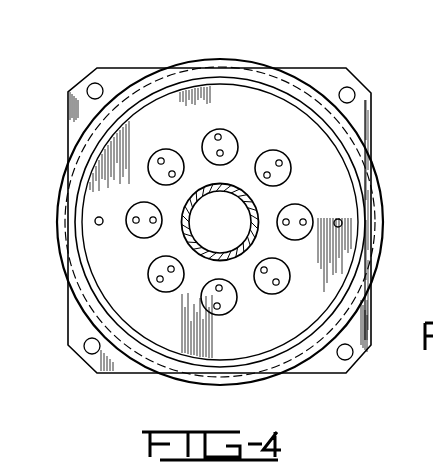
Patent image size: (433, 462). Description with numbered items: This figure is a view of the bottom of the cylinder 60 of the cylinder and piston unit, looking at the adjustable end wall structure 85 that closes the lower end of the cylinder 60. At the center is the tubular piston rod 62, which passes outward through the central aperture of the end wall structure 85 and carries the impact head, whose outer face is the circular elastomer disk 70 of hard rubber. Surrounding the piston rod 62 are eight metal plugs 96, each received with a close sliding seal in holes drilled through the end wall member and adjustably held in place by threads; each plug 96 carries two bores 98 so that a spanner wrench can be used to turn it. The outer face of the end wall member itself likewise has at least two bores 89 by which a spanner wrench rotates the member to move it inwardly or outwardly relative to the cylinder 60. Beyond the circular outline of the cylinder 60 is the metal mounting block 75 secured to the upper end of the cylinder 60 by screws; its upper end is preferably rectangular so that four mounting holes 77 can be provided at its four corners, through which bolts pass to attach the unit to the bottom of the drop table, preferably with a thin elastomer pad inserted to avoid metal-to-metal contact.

The cylinder 60 is at (310, 88).
The piston rod 62 is at (242, 254).
The disk 70 is at (317, 5).
The mounting block 75 is at (370, 131).
The mounting holes 77 is at (95, 88).
The end wall structure 85 is at (252, 95).
The bores 89 is at (100, 225).
The plugs 96 is at (216, 128).
The bores 98 is at (286, 219).